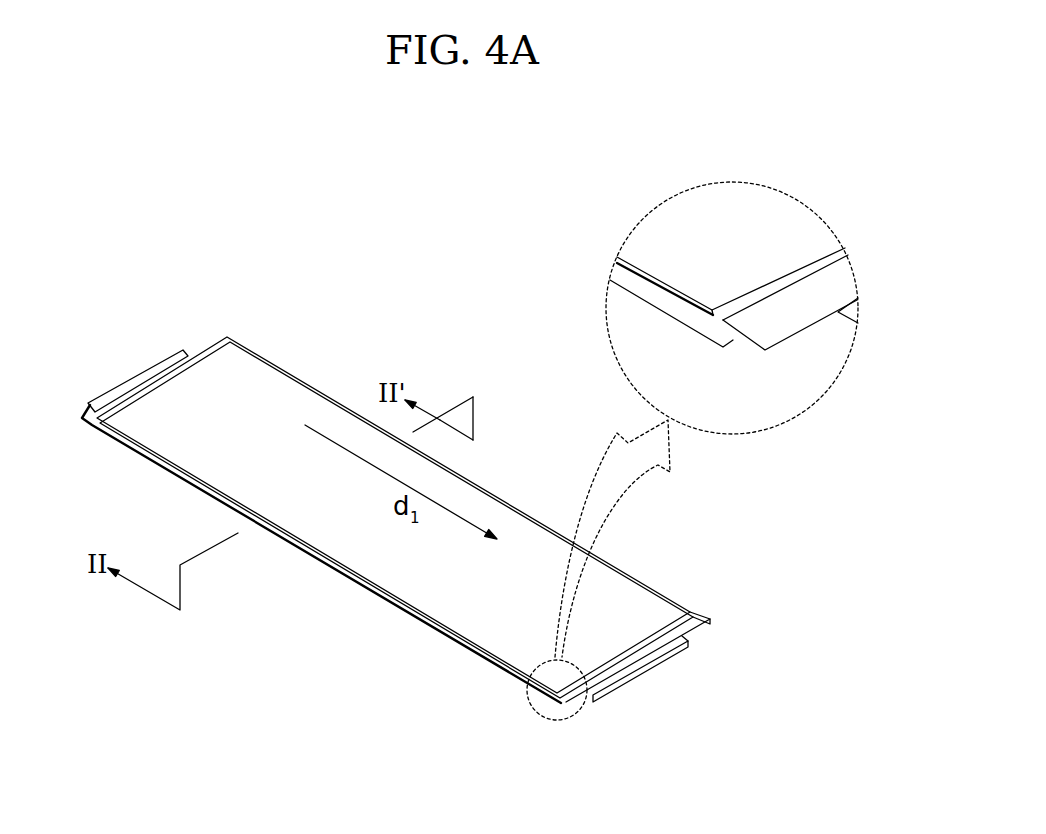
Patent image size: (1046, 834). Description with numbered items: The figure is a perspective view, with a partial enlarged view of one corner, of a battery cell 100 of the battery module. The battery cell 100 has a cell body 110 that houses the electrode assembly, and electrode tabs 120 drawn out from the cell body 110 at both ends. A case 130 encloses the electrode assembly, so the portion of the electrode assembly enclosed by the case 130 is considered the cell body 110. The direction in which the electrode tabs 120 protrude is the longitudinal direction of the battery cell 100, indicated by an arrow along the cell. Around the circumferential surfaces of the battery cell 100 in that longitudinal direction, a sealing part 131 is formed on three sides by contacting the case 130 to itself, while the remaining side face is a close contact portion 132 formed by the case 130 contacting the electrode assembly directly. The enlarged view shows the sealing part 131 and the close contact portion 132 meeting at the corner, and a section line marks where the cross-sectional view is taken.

The battery cell 100 is at (92, 158).
The cell body 110 is at (463, 605).
The electrode tabs 120 is at (147, 377).
The case 130 is at (296, 375).
The sealing part 131 is at (697, 608).
The close contact portion 132 is at (332, 562).